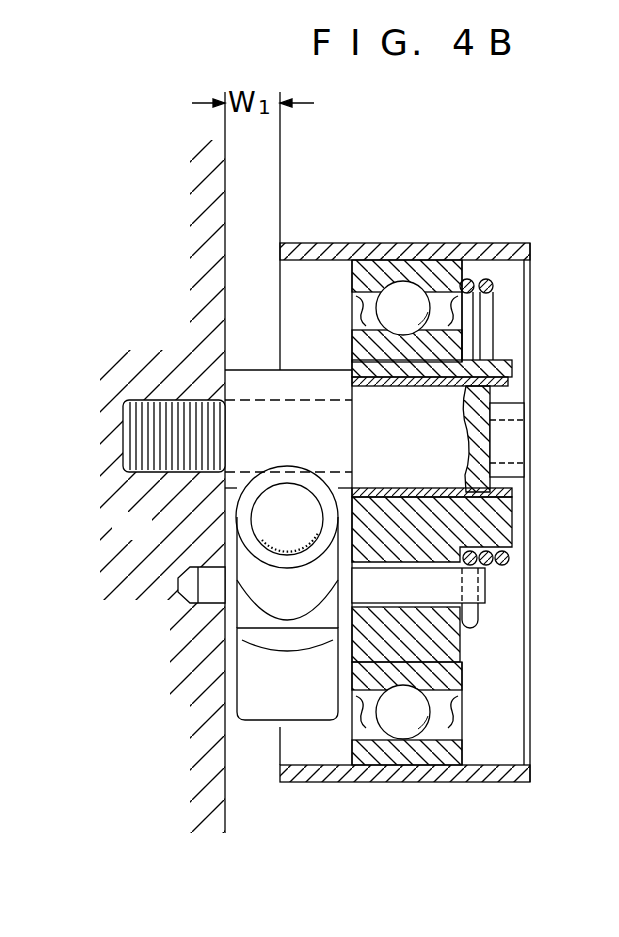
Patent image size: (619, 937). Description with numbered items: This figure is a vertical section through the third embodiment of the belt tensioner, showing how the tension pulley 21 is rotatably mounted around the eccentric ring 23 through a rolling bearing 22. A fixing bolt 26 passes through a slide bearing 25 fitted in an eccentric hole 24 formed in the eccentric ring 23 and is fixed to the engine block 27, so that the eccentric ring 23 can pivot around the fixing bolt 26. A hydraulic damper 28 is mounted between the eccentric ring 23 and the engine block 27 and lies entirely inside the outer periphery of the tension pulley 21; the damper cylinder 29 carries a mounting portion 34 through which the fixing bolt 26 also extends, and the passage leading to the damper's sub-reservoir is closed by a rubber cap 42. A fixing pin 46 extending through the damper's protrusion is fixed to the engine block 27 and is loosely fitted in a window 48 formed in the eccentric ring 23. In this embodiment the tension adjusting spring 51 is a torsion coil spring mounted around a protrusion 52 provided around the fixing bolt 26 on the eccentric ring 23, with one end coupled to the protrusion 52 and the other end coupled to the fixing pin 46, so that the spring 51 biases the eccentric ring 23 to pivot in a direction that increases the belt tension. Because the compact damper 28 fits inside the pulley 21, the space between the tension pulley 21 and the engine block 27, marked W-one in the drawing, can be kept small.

The tension pulley 21 is at (500, 249).
The rolling bearing 22 is at (408, 262).
The eccentric ring 23 is at (447, 645).
The eccentric hole 24 is at (493, 361).
The slide bearing 25 is at (504, 398).
The fixing bolt 26 is at (470, 432).
The engine block 27 is at (217, 810).
The hydraulic damper 28 is at (305, 732).
The damper cylinder 29 is at (252, 690).
The mounting portion 34 is at (280, 378).
The rubber cap 42 is at (263, 523).
The fixing pin 46 is at (473, 583).
The window 48 is at (427, 612).
The tension adjusting spring 51 is at (493, 287).
The protrusion 52 is at (500, 527).